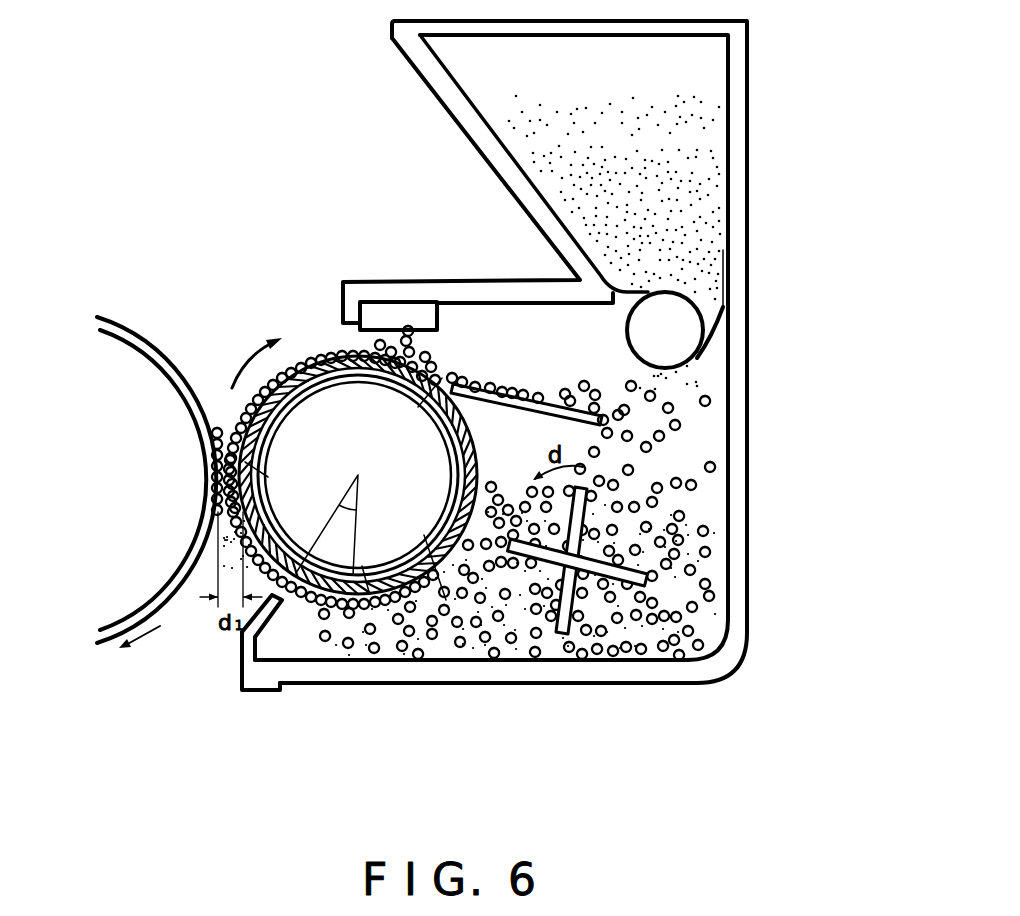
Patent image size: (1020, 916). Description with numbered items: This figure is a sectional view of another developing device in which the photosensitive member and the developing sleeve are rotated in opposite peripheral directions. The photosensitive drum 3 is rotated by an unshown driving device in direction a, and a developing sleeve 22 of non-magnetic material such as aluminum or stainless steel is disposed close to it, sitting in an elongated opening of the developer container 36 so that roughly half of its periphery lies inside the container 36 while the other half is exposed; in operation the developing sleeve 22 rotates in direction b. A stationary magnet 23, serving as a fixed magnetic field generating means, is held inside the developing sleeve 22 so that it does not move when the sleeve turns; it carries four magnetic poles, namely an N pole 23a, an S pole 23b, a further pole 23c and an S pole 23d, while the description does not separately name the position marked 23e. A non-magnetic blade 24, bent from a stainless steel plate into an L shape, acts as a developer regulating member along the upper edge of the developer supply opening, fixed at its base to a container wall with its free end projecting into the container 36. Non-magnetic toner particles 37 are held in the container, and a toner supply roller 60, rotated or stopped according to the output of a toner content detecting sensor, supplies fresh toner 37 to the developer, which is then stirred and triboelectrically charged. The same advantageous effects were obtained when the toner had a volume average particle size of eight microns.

The photosensitive drum 3 is at (115, 632).
The developing sleeve 22 is at (297, 355).
The stationary magnet 23 is at (283, 440).
The N pole 23a is at (369, 600).
The S pole 23b is at (247, 465).
The magnetic pole 23c is at (324, 392).
The S pole 23d is at (437, 378).
The developer stripping region 23e is at (446, 605).
The non-magnetic blade 24 is at (268, 693).
The developer container 36 is at (638, 672).
The non-magnetic toner particles 37 is at (708, 190).
The toner supply roller 60 is at (688, 336).